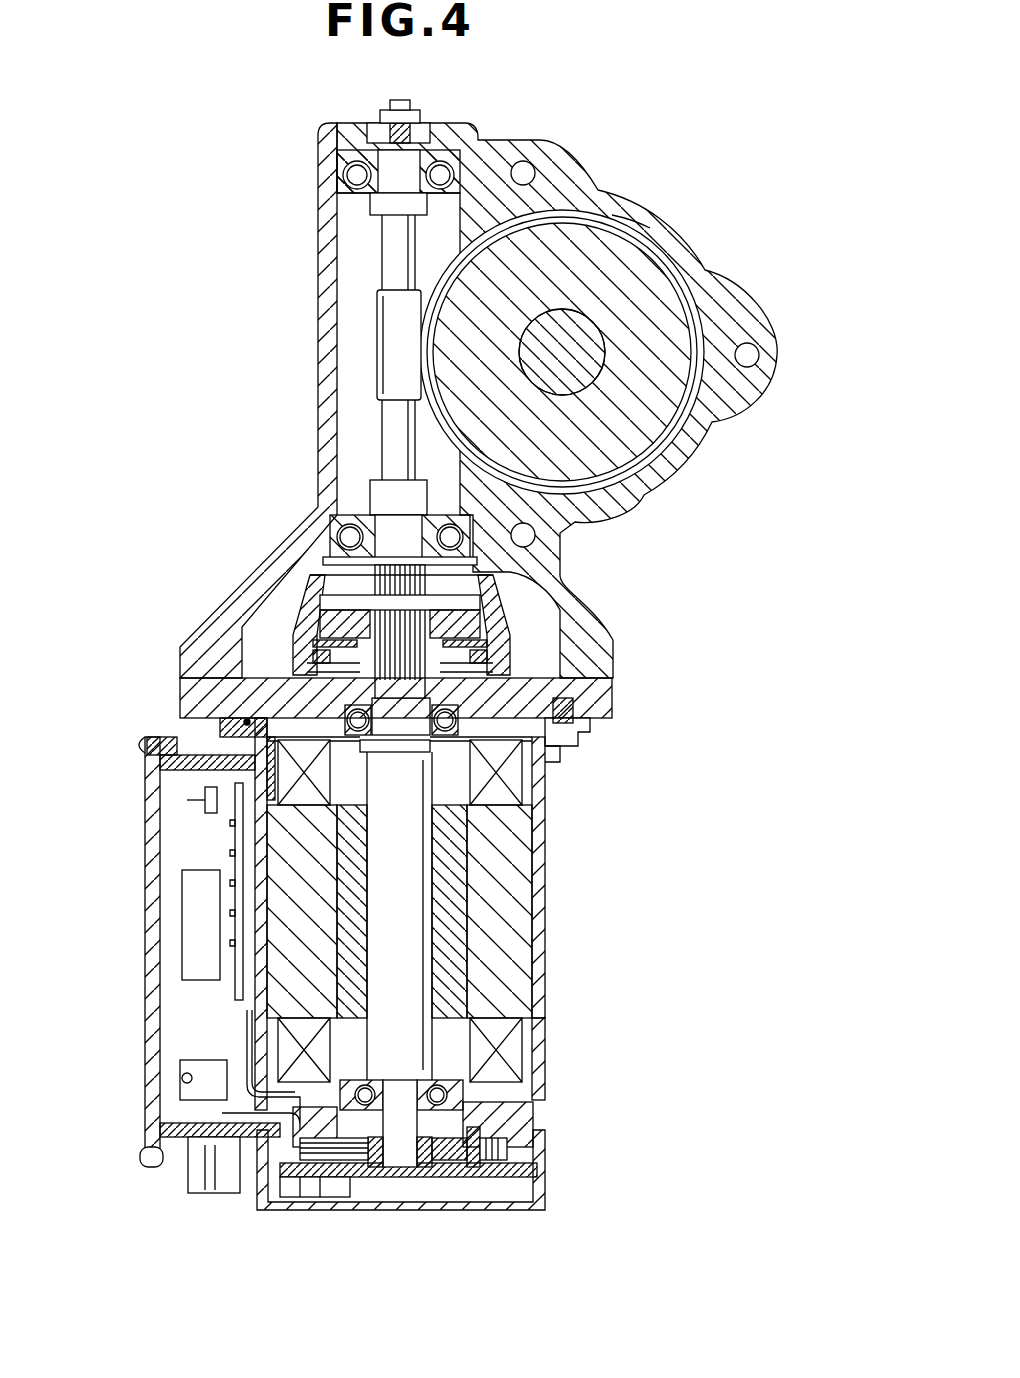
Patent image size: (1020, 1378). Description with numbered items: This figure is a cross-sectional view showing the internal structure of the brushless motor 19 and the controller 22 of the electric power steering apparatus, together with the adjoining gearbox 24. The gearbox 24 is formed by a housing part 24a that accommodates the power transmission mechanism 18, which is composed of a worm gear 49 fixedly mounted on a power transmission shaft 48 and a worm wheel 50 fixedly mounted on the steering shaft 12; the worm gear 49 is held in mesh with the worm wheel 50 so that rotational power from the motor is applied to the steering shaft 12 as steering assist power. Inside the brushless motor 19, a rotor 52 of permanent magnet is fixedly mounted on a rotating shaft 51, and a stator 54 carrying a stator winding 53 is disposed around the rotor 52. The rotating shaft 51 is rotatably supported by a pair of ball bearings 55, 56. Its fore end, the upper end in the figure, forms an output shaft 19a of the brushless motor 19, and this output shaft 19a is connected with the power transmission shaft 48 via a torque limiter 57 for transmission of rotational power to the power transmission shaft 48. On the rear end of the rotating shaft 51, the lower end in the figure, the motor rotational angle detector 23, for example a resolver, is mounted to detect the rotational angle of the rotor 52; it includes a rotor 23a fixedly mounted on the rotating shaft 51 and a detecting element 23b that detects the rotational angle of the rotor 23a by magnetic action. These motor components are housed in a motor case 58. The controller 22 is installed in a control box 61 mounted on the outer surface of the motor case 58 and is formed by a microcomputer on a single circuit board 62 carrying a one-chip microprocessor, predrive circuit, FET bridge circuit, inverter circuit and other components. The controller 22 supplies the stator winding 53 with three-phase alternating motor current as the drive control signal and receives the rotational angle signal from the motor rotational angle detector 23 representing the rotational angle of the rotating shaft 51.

The steering shaft 12 is at (650, 430).
The power transmission mechanism 18 is at (375, 340).
The brushless motor 19 is at (552, 802).
The output shaft 19a is at (548, 762).
The controller 22 is at (200, 852).
The motor rotational angle detector 23 is at (570, 1278).
The rotor 23a is at (420, 1167).
The detecting element 23b is at (450, 1153).
The gearbox 24 is at (712, 258).
The housing part 24a is at (630, 207).
The power transmission shaft 48 is at (390, 450).
The worm gear 49 is at (398, 296).
The worm wheel 50 is at (570, 368).
The rotating shaft 51 is at (410, 925).
The rotor 52 is at (450, 892).
The stator winding 53 is at (548, 780).
The stator 54 is at (480, 1005).
The ball bearing 55 is at (350, 716).
The ball bearing 56 is at (540, 1085).
The torque limiter 57 is at (280, 645).
The motor case 58 is at (540, 1030).
The control box 61 is at (148, 910).
The circuit board 62 is at (225, 1013).